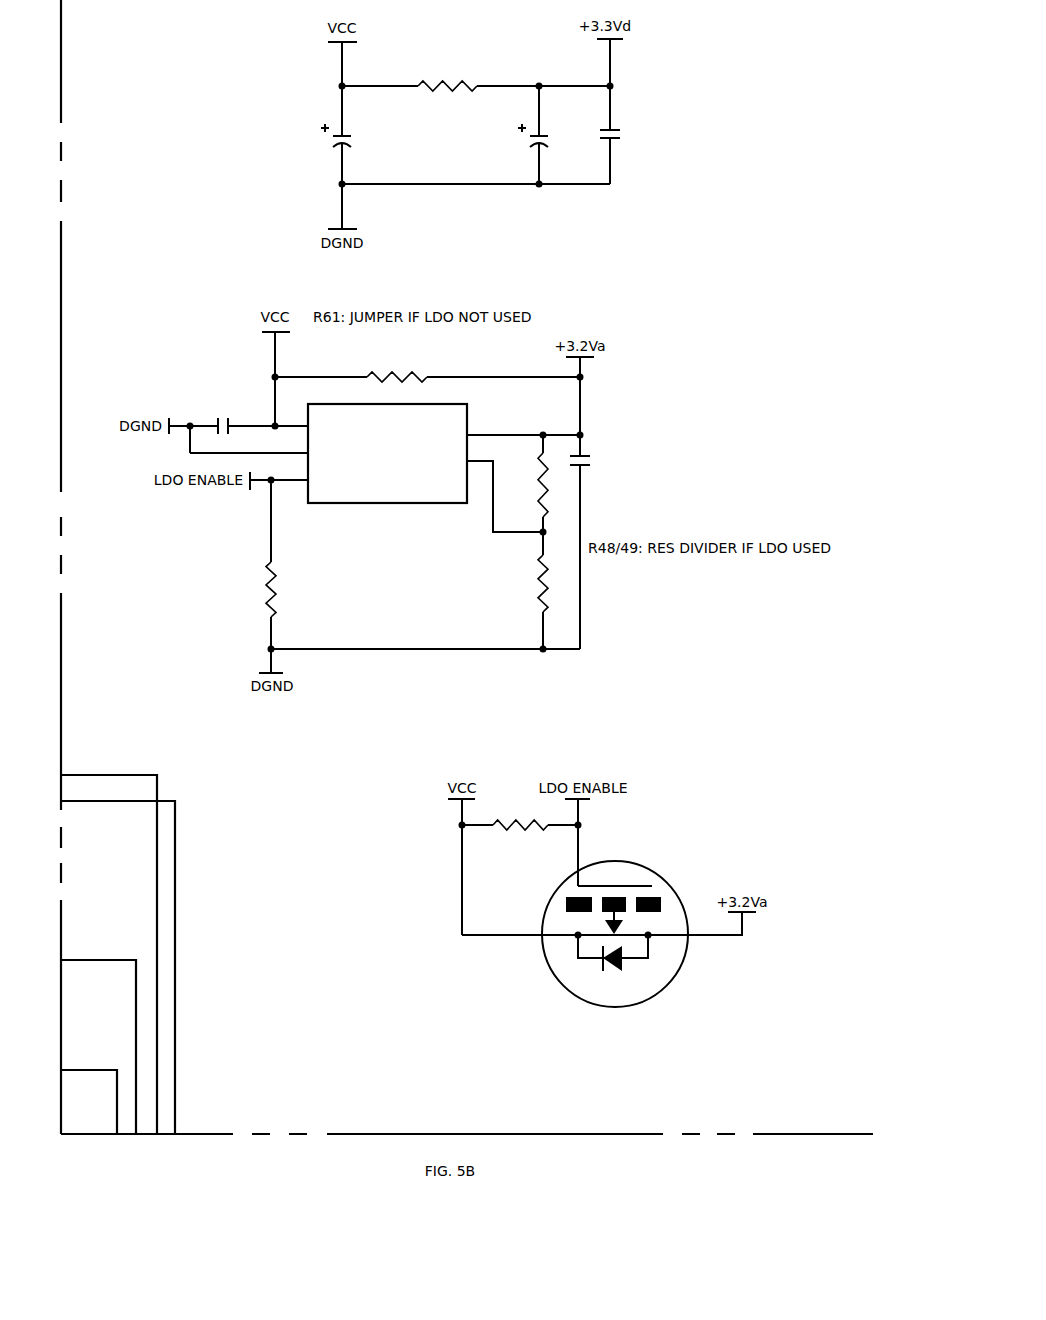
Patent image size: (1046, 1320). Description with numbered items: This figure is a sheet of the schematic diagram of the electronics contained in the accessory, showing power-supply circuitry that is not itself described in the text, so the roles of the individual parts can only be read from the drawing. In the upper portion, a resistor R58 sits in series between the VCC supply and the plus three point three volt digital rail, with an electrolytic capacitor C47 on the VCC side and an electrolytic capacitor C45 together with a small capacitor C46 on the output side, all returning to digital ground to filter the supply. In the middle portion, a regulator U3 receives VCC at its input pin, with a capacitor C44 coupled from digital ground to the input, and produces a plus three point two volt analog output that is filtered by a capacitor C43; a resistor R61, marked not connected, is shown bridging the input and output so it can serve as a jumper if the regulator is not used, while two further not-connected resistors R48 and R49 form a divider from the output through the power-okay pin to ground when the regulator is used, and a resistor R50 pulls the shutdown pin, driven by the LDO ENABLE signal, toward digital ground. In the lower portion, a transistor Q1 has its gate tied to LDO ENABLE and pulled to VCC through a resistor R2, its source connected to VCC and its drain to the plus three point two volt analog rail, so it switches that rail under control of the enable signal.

The resistor 10R R58 is at (447, 84).
The capacitor 220uF 6.3V C47 is at (287, 140).
The capacitor 220uF 6.3V C45 is at (500, 140).
The capacitor .01uF C46 is at (630, 136).
The jumper resistor (NC) R61 is at (396, 363).
The LDO regulator LP39851M5-3.2 U3 is at (388, 459).
The capacitor 1uF C44 is at (225, 414).
The capacitor 1uF C43 is at (598, 459).
The resistor (NC) R48 is at (522, 485).
The resistor (NC) R49 is at (521, 583).
The resistor 10K R50 is at (291, 589).
The resistor 10K R2 is at (520, 829).
The P-channel MOSFET ZNM61PO3P Q1 is at (612, 938).